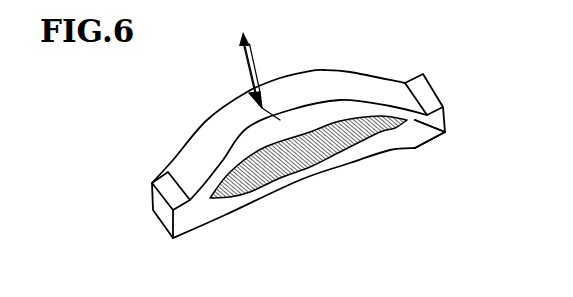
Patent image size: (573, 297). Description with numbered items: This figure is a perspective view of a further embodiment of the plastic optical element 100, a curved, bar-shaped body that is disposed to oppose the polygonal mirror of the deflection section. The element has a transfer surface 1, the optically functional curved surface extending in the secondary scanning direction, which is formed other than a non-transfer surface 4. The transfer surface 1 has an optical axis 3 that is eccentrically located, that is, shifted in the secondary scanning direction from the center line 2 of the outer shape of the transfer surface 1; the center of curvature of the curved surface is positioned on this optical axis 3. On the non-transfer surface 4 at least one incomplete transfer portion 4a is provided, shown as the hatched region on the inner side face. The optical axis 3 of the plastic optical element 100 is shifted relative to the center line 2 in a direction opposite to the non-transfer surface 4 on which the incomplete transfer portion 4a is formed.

The transfer surface 1 is at (340, 79).
The center line of outer shape of transfer surface 2 is at (258, 52).
The optical axis 3 is at (250, 66).
The non-transfer surface 4 is at (445, 132).
The incomplete transfer portion 4a is at (240, 194).
The plastic optical element 100 is at (332, 208).